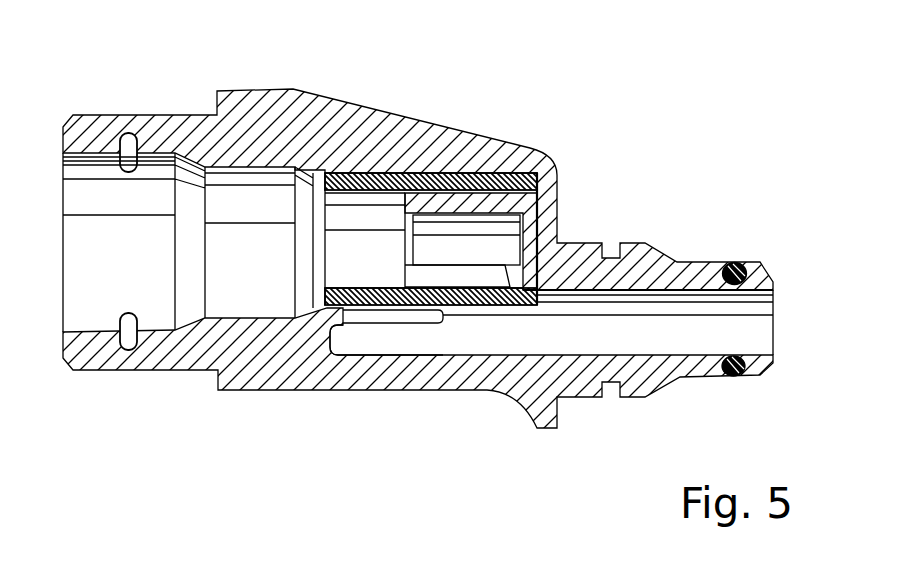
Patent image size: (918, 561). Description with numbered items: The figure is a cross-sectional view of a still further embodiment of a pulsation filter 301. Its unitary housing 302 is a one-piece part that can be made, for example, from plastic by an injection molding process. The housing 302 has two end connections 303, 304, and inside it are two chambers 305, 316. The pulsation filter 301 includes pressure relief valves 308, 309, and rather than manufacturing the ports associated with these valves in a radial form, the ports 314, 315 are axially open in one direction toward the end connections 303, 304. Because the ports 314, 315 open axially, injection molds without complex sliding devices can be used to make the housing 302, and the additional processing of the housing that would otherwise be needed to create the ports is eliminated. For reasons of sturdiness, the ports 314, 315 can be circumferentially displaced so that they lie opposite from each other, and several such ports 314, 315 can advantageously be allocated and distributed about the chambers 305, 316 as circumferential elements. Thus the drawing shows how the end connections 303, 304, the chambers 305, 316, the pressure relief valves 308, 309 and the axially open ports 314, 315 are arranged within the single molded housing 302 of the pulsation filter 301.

The pulsation filter 301 is at (560, 85).
The unitary housing 302 is at (327, 110).
The end connection 303 is at (142, 274).
The end connection 304 is at (753, 280).
The chamber 305 is at (660, 340).
The pressure relief valve 308 is at (378, 324).
The pressure relief valve 309 is at (478, 318).
The port 314 is at (453, 280).
The port 315 is at (410, 315).
The chamber 316 is at (388, 269).